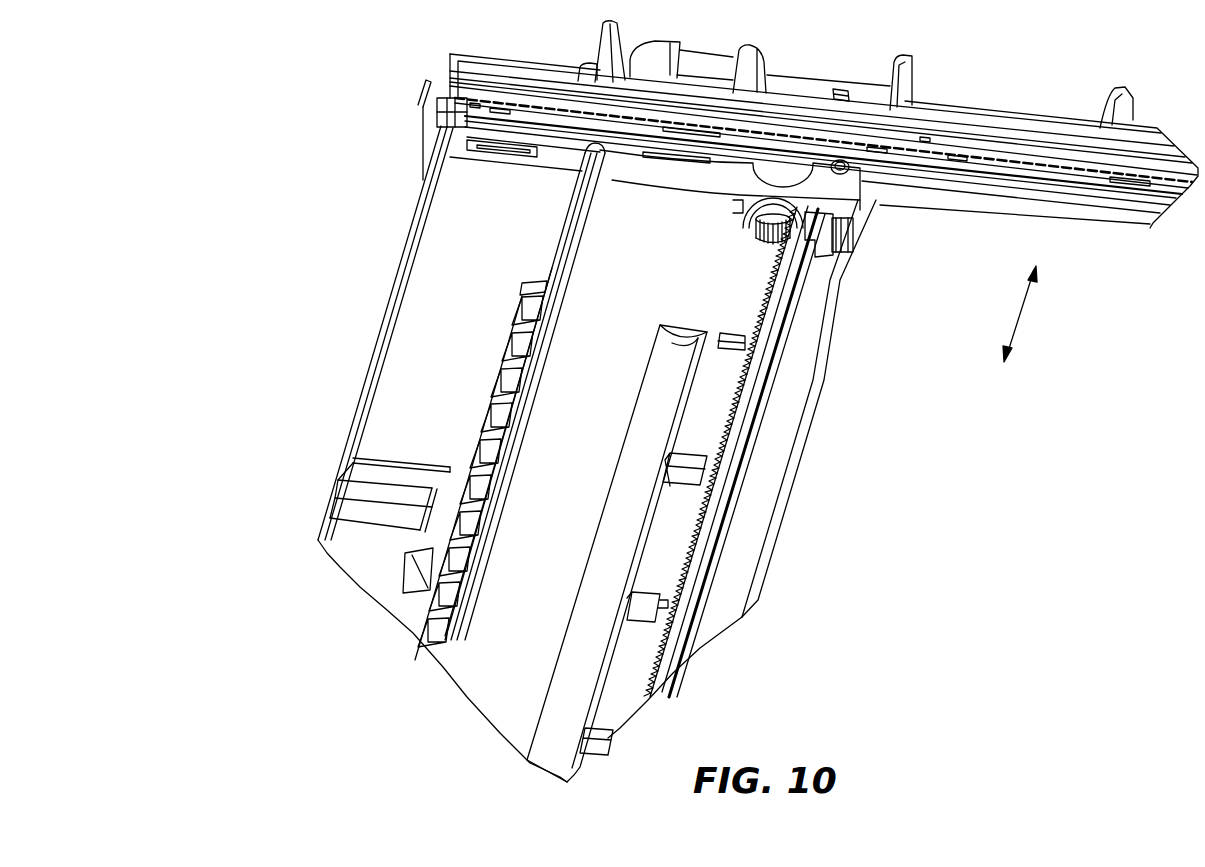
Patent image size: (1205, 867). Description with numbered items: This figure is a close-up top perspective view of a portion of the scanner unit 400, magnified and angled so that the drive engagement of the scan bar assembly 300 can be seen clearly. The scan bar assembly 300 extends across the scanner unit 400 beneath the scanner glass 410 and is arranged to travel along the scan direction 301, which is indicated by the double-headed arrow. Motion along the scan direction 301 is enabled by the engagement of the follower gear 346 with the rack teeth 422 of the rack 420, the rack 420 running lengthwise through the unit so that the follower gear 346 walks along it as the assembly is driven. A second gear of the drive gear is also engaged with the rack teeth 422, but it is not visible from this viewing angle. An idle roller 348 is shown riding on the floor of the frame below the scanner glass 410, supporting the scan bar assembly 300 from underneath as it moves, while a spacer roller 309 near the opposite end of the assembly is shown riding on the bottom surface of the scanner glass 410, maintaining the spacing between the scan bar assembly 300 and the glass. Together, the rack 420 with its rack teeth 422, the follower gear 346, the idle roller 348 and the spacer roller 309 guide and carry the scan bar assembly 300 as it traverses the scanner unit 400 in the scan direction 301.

The scan bar assembly 300 is at (958, 216).
The scan direction 301 is at (1020, 318).
The spacer roller 309 is at (450, 137).
The follower gear 346 is at (756, 229).
The idle roller 348 is at (838, 250).
The scanner unit 400 is at (263, 188).
The scanner glass 410 is at (430, 298).
The rack 420 is at (766, 300).
The rack teeth 422 is at (778, 255).